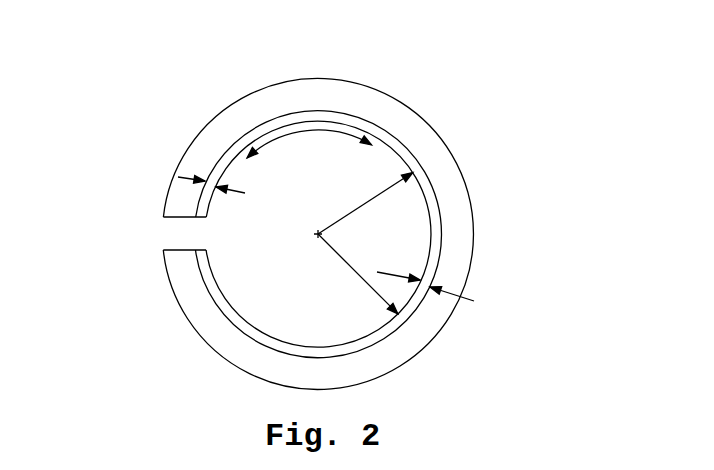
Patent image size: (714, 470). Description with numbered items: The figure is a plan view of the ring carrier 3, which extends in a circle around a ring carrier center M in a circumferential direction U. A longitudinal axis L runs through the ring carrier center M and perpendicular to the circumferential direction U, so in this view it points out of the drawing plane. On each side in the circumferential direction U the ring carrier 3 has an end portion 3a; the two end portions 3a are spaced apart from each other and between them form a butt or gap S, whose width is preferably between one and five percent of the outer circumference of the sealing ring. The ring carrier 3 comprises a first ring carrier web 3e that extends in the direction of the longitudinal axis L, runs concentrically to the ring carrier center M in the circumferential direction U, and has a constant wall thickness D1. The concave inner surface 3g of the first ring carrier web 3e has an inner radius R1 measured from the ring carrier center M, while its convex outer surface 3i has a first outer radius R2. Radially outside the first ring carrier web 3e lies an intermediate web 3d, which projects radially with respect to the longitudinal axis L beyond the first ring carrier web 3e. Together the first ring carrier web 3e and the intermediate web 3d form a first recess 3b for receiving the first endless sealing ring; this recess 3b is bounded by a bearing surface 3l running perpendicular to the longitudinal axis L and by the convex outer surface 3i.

The ring carrier 3 is at (465, 132).
The end portion 3a is at (162, 218).
The first recess 3b is at (415, 138).
The intermediate web 3d is at (473, 243).
The first ring carrier web 3e is at (377, 128).
The concave inner surface 3g is at (429, 255).
The convex outer surface 3i is at (262, 121).
The bearing surface 3l is at (412, 330).
The wall thickness D1 is at (323, 235).
The inner radius R1 is at (357, 200).
The first outer radius R2 is at (350, 266).
The circumferential direction U is at (327, 130).
The ring carrier center M is at (318, 234).
The longitudinal axis L is at (293, 224).
The gap S is at (200, 238).